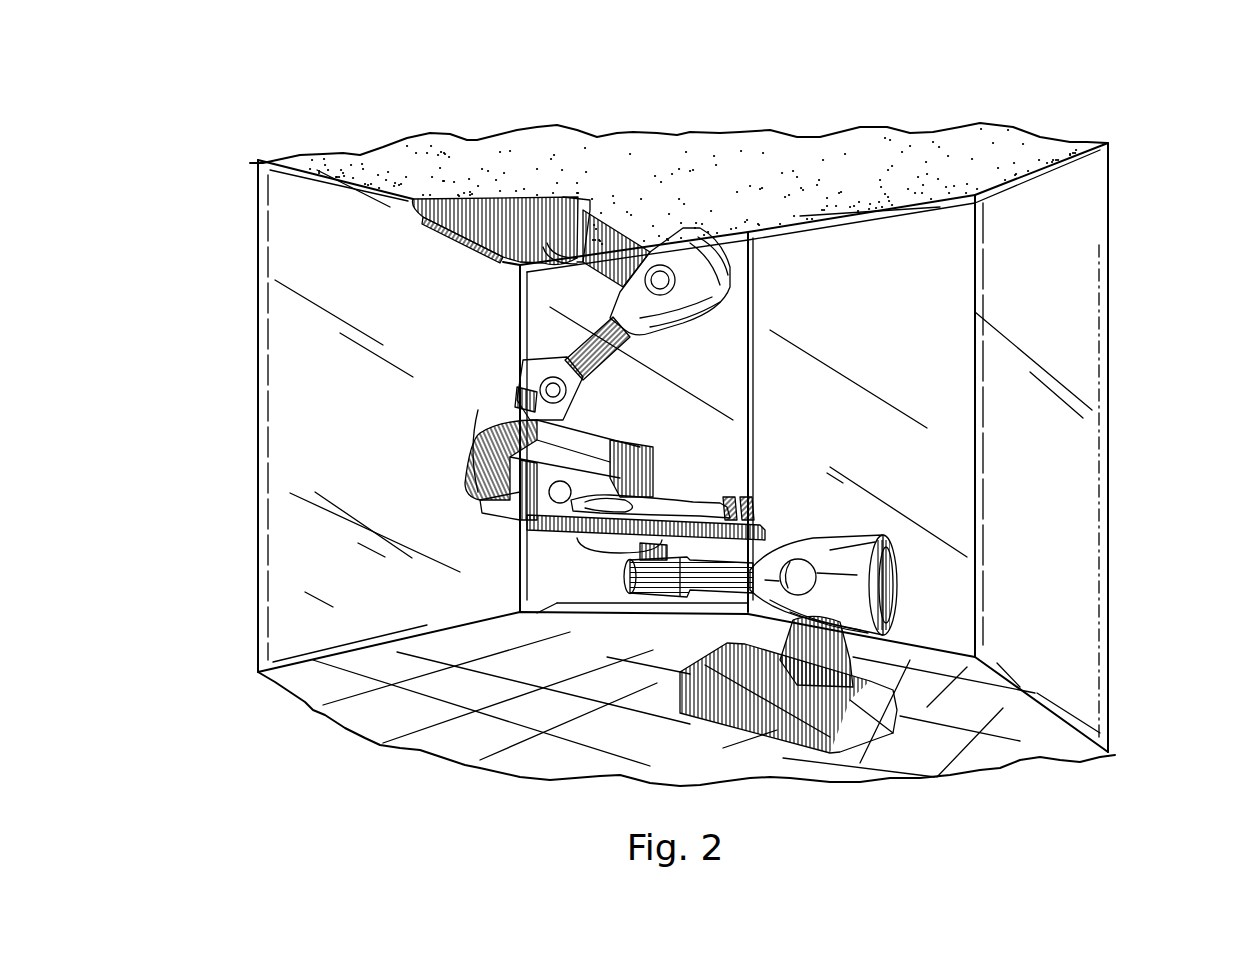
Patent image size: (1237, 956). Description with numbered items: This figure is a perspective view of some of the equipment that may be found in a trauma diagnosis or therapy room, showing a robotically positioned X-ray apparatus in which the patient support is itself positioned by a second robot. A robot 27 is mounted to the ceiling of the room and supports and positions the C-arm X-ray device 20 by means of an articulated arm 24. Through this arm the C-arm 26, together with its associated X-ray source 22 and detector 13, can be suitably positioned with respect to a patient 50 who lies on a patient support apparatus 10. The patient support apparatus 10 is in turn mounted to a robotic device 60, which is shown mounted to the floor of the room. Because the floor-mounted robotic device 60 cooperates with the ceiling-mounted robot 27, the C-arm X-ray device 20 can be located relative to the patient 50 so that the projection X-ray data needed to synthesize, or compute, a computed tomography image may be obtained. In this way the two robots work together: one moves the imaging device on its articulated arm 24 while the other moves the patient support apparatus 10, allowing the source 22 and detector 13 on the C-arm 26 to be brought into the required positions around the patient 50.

The patient support apparatus 10 is at (754, 642).
The detector 13 is at (507, 507).
The C-arm X-ray device 20 is at (841, 389).
The X-ray source 22 is at (625, 552).
The articulated arm 24 is at (713, 243).
The C-arm 26 is at (610, 447).
The robot 27 is at (488, 279).
The patient 50 is at (697, 500).
The robotic device 60 is at (860, 533).